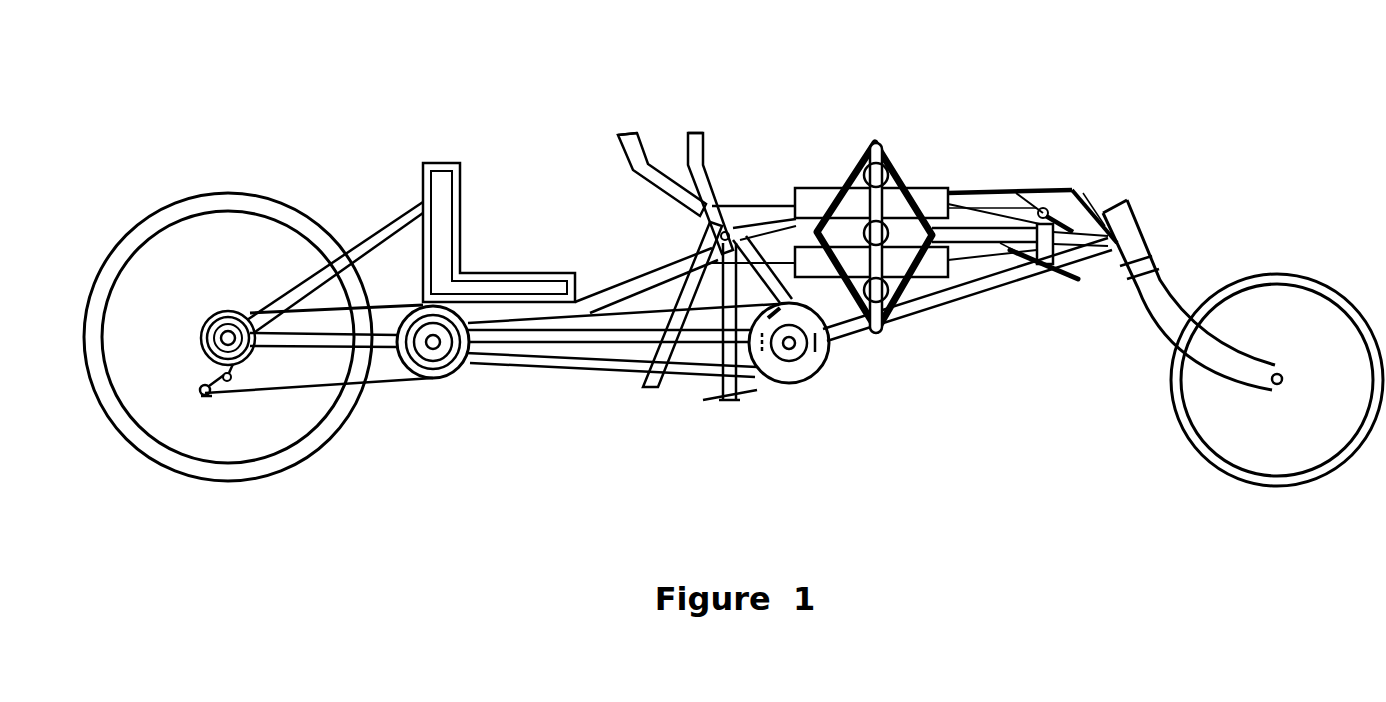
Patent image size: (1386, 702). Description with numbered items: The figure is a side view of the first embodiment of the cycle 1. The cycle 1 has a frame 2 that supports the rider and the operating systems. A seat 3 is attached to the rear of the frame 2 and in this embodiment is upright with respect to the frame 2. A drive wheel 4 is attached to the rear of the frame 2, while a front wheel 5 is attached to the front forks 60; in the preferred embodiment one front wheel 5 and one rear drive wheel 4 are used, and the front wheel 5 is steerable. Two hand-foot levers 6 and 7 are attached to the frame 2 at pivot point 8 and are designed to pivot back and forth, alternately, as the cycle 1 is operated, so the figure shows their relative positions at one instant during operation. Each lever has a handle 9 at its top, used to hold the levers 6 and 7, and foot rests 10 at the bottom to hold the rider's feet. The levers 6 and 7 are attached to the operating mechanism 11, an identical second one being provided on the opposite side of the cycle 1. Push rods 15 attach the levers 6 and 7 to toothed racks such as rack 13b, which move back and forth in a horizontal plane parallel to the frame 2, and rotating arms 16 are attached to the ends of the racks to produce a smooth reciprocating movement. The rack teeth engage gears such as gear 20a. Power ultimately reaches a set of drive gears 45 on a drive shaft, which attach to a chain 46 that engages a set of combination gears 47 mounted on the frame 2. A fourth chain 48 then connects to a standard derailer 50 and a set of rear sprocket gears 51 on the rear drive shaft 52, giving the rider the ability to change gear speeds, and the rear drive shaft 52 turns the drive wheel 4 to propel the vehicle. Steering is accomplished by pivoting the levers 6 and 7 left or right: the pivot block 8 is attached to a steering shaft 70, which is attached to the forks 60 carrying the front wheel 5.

The cycle 1 is at (803, 74).
The frame 2 is at (410, 205).
The seat 3 is at (462, 160).
The drive wheel 4 is at (188, 192).
The front wheel 5 is at (1318, 280).
The hand-foot lever 6 is at (655, 165).
The hand-foot lever 7 is at (684, 168).
The pivot point 8 is at (712, 236).
The handle 9 is at (622, 132).
The foot rest 10 is at (703, 400).
The operating mechanism 11 is at (935, 157).
The rack 13b is at (822, 195).
The push rod 15 is at (752, 205).
The rotating arm 16 is at (1065, 284).
The gear 20a is at (870, 140).
The drive gears 45 is at (788, 380).
The chain 46 is at (545, 368).
The combination gears 47 is at (437, 385).
The fourth chain 48 is at (255, 387).
The derailer 50 is at (208, 372).
The rear sprocket gears 51 is at (210, 315).
The rear drive shaft 52 is at (224, 318).
The front forks 60 is at (1152, 242).
The steering shaft 70 is at (1074, 190).